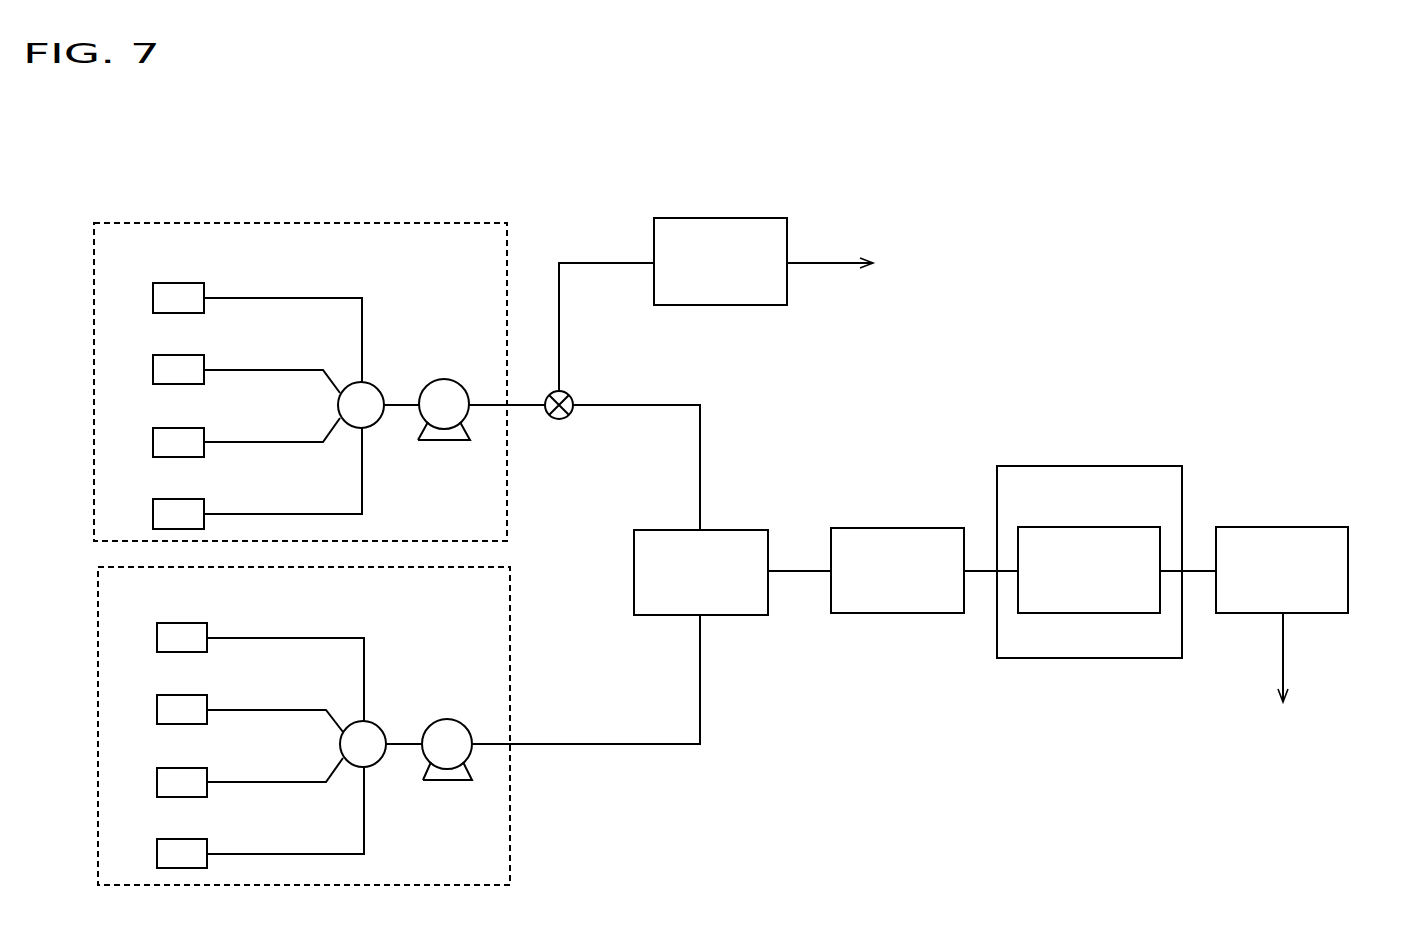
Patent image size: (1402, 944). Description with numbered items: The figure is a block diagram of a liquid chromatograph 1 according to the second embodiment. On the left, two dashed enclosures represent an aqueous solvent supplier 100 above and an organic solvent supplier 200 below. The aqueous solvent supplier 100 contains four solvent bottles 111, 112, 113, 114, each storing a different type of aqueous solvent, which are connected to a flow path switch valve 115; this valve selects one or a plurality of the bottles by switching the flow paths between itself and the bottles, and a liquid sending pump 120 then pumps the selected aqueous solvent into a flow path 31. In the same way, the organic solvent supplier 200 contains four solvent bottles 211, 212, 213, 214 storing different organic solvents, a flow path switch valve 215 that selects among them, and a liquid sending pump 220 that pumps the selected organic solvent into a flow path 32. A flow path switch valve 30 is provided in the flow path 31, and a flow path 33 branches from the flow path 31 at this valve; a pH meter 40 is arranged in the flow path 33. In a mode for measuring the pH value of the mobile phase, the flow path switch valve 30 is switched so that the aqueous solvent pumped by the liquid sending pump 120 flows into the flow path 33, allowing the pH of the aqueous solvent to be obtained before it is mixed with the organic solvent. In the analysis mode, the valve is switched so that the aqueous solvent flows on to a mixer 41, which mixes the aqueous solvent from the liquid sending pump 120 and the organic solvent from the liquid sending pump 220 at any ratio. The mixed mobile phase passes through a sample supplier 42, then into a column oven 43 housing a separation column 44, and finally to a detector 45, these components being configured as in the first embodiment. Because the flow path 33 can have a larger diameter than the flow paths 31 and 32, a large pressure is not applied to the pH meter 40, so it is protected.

The liquid chromatograph 1 is at (1358, 780).
The flow path switch valve 30 is at (572, 390).
The flow path 31 is at (523, 400).
The flow path 32 is at (605, 744).
The flow path 33 is at (565, 262).
The pH meter 40 is at (733, 218).
The mixer 41 is at (717, 530).
The sample supplier 42 is at (893, 528).
The column oven 43 is at (1060, 466).
The separation column 44 is at (1102, 527).
The detector 45 is at (1295, 527).
The aqueous solvent supplier 100 is at (508, 518).
The solvent bottle 111 is at (153, 298).
The solvent bottle 112 is at (153, 370).
The solvent bottle 113 is at (153, 442).
The solvent bottle 114 is at (153, 514).
The flow path switch valve 115 is at (368, 398).
The liquid sending pump 120 is at (444, 390).
The organic solvent supplier 200 is at (509, 710).
The solvent bottle 211 is at (157, 638).
The solvent bottle 212 is at (157, 710).
The solvent bottle 213 is at (157, 782).
The solvent bottle 214 is at (157, 854).
The flow path switch valve 215 is at (371, 737).
The liquid sending pump 220 is at (447, 730).